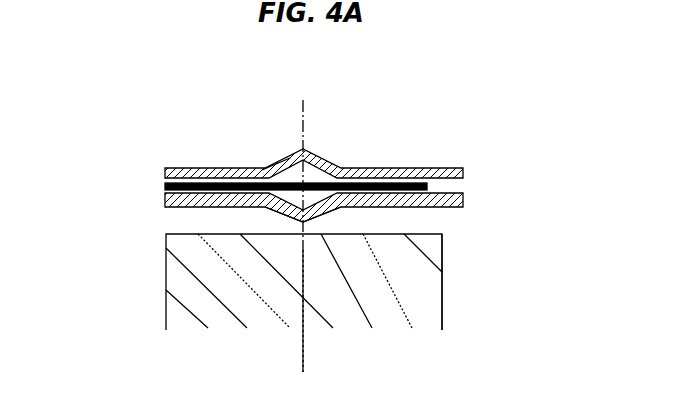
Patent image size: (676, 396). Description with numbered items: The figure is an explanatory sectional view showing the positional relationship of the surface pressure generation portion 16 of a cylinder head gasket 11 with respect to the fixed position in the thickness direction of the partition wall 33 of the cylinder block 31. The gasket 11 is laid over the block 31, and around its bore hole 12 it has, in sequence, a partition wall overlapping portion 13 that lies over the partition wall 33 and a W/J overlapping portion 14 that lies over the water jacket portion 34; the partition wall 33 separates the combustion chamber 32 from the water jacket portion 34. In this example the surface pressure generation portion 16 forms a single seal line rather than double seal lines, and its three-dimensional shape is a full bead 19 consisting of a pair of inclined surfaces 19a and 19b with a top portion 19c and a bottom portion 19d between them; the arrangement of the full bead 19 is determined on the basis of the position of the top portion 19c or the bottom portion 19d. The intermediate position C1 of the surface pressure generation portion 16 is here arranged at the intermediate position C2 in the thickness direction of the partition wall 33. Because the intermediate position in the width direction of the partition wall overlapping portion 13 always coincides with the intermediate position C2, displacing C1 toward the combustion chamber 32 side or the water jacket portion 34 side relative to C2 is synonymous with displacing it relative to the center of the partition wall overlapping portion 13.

The cylinder head gasket 11 is at (343, 162).
The bore hole 12 is at (298, 140).
The partition wall overlapping portion 13 is at (397, 170).
The W/J overlapping portion 14 is at (472, 197).
The surface pressure generation portion 16 is at (292, 236).
The full bead 19 is at (187, 118).
The inclined surface 19a is at (262, 170).
The inclined surface 19b is at (261, 121).
The top portion 19c is at (297, 150).
The bottom portion 19d is at (298, 160).
The cylinder block 31 is at (445, 258).
The combustion chamber 32 is at (306, 273).
The partition wall 33 is at (255, 303).
The water jacket portion 34 is at (549, 288).
The intermediate position of the surface pressure generation portion C1 is at (306, 121).
The intermediate position in the thickness direction of the partition wall C2 is at (306, 353).